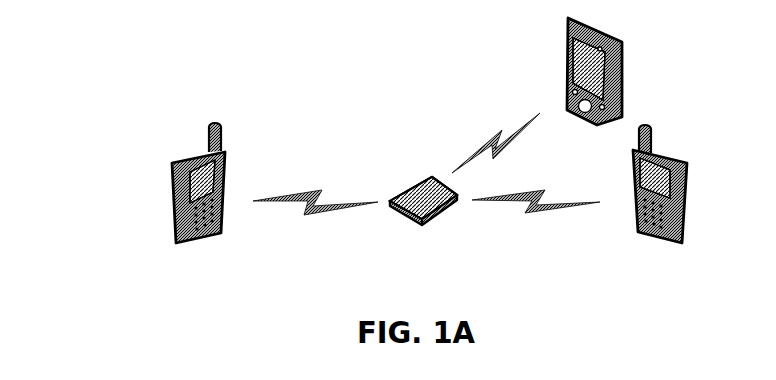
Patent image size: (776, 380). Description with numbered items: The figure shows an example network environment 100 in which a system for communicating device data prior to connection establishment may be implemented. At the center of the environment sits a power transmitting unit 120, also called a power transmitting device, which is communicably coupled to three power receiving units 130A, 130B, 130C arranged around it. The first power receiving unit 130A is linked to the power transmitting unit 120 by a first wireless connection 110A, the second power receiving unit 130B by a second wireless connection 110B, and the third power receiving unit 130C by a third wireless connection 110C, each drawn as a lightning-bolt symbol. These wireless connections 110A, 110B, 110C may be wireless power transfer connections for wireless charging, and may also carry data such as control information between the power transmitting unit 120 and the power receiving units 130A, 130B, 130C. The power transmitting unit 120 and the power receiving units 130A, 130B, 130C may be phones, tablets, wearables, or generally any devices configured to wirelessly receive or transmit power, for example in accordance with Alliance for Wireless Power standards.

The network environment 100 is at (126, 66).
The wireless connection 110A is at (323, 190).
The wireless connection 110B is at (517, 190).
The wireless connection 110C is at (502, 131).
The power transmitting unit (PTU) 120 is at (427, 221).
The power receiving unit (PRU) 130A is at (223, 143).
The power receiving unit (PRU) 130B is at (673, 152).
The power receiving unit (PRU) 130C is at (622, 42).